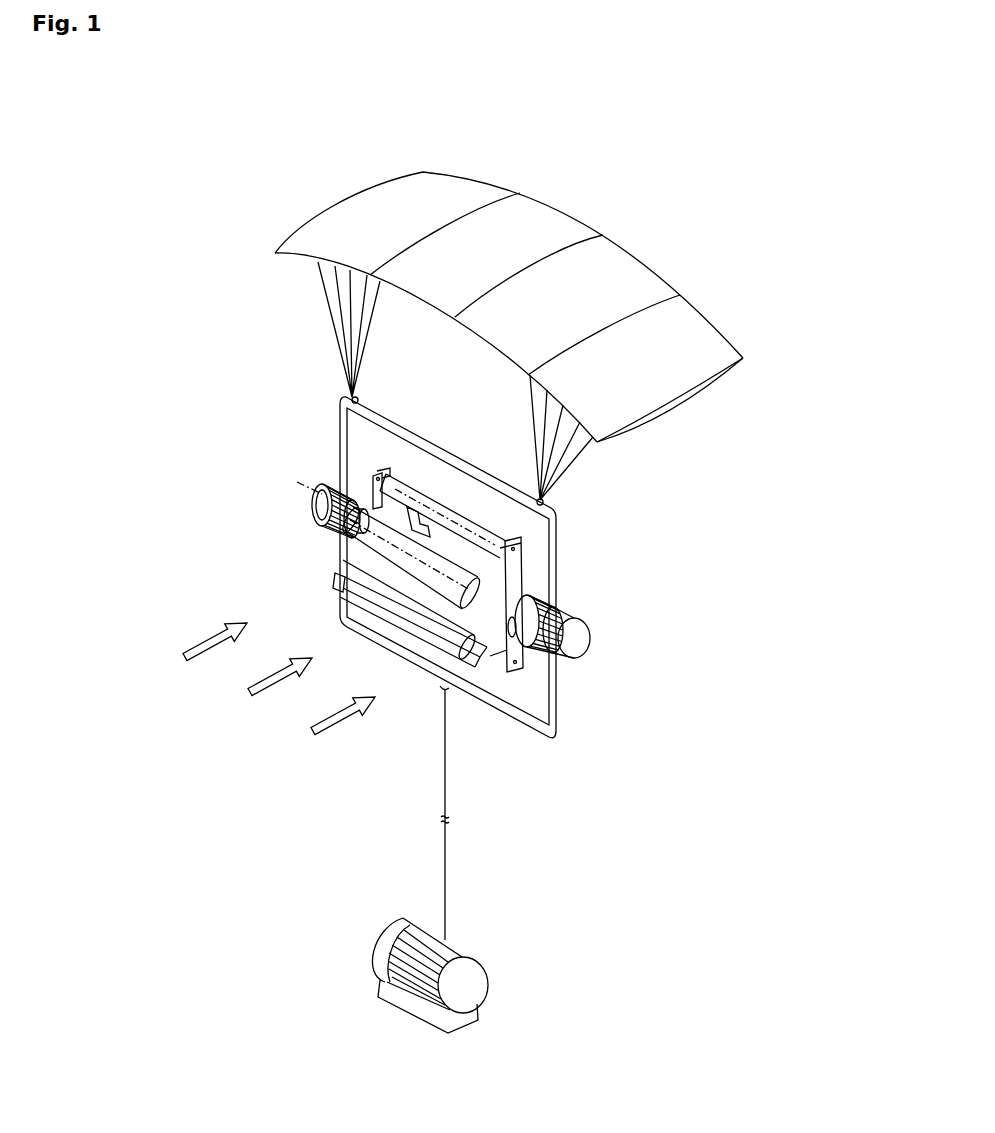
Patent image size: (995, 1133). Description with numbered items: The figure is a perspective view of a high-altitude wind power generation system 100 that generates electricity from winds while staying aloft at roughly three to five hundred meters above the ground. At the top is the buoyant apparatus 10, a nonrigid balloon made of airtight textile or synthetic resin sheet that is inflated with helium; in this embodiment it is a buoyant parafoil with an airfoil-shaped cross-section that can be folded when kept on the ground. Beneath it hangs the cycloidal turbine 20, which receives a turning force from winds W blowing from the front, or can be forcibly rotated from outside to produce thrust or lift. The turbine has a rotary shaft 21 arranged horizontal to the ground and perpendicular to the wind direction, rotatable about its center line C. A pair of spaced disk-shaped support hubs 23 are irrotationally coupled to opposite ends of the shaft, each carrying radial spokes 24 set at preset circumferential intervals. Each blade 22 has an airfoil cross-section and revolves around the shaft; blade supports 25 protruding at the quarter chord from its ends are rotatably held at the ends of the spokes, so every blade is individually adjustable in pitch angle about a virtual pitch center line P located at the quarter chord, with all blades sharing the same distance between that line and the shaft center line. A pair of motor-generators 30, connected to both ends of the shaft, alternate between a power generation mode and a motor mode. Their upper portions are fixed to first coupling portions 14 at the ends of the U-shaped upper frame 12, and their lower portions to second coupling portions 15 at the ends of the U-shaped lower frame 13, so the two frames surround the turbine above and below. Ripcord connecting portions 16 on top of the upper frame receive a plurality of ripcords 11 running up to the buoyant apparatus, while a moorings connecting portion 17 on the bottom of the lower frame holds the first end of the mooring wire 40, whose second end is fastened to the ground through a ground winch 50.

The high-altitude wind power generation system 100 is at (632, 183).
The buoyant apparatus 10 is at (694, 336).
The ripcords 11 is at (337, 343).
The upper frame 12 is at (558, 532).
The lower frame 13 is at (558, 727).
The first coupling portion 14 is at (338, 486).
The second coupling portion 15 is at (326, 524).
The ripcord connecting portion 16 is at (360, 402).
The moorings connecting portion 17 is at (438, 688).
The cycloidal turbine 20 is at (494, 586).
The rotary shaft 21 is at (494, 582).
The blade 22 is at (415, 474).
The support hub 23 is at (498, 656).
The radial spoke 24 is at (517, 670).
The blade support 25 is at (381, 477).
The motor-generator 30 is at (311, 474).
The mooring wire 40 is at (447, 787).
The ground winch 50 is at (478, 978).
The pitch center line P is at (433, 503).
The center line C is at (588, 652).
The winds W is at (203, 640).